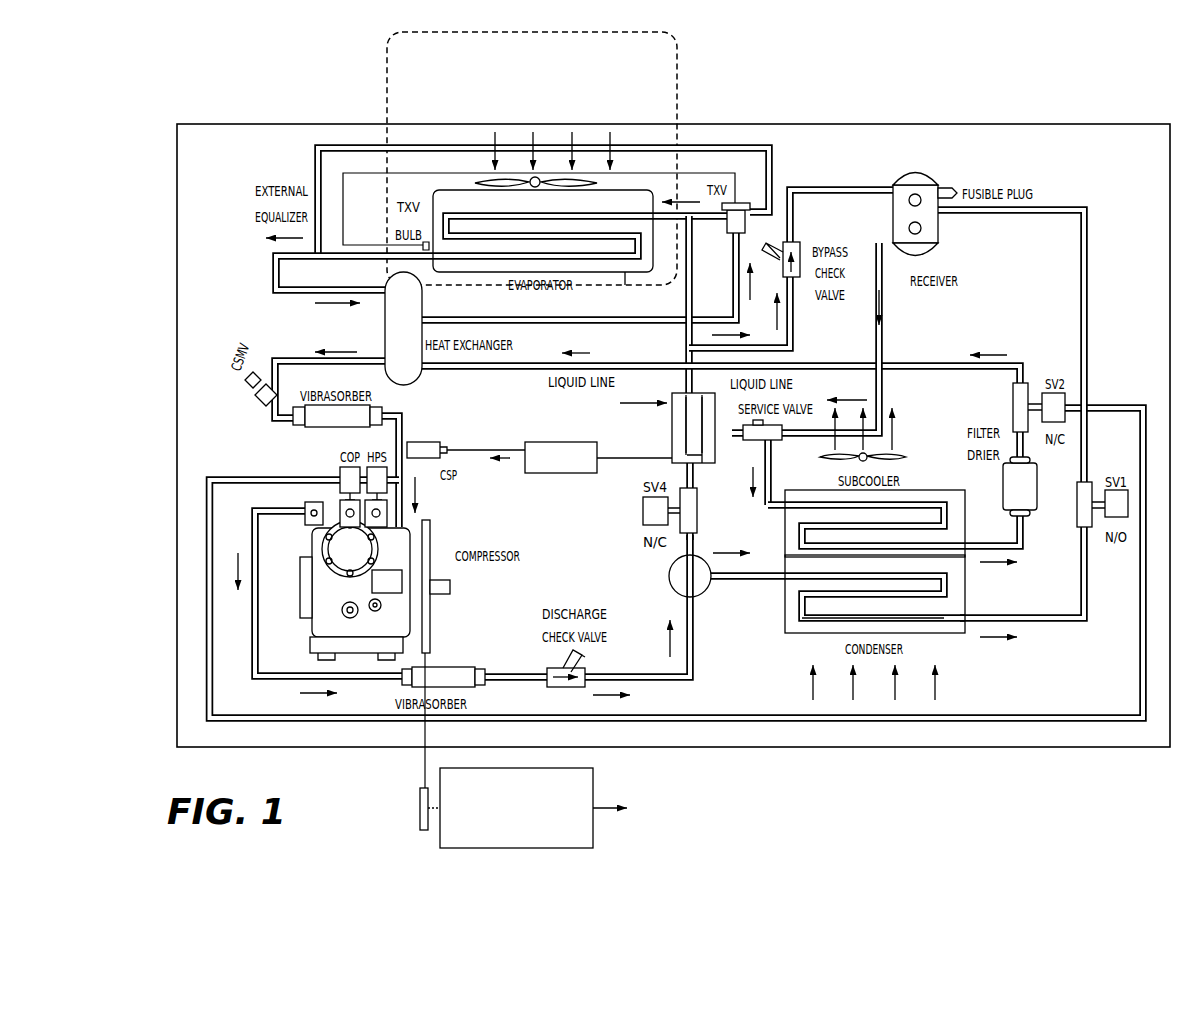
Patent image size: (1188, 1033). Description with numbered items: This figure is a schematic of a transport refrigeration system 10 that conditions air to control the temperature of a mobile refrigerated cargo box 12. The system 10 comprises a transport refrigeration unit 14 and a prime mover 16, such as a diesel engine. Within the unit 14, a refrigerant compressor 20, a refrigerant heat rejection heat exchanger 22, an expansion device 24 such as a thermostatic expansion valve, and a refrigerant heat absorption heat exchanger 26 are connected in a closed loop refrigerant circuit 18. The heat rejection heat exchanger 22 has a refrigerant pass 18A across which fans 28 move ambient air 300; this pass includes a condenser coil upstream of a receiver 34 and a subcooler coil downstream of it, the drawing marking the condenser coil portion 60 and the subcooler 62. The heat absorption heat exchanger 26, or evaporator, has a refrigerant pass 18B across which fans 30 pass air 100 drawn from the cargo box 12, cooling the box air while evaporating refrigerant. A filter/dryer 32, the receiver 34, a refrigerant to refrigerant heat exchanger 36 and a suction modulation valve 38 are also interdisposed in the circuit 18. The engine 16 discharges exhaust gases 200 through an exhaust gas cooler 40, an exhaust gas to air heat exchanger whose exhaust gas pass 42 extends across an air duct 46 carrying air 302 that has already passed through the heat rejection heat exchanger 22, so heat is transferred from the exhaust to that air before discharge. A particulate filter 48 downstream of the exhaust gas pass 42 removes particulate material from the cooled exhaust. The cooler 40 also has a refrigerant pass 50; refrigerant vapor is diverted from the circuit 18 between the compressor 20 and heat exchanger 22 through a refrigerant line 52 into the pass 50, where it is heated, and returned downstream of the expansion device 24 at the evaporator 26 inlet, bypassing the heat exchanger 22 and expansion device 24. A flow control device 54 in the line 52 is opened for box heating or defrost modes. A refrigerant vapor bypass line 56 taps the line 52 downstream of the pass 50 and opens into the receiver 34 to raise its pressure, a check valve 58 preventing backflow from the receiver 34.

The refrigeration system 10 is at (845, 88).
The refrigerated cargo box 12 is at (541, 75).
The transport refrigeration unit 14 is at (992, 125).
The prime mover 16 is at (583, 855).
The refrigerant circuit 18 is at (663, 680).
The refrigerant pass 18A is at (793, 602).
The refrigerant pass 18B is at (612, 210).
The compressor 20 is at (317, 613).
The refrigerant heat rejection heat exchanger 22 is at (975, 592).
The expansion device 24 is at (746, 222).
The refrigerant heat absorption heat exchanger 26 is at (625, 282).
The fans 28 is at (902, 452).
The fans 30 is at (580, 177).
The filter/dryer 32 is at (1037, 502).
The receiver 34 is at (940, 222).
The refrigerant to refrigerant heat exchanger 36 is at (383, 332).
The suction modulation valve 38 is at (250, 400).
The exhaust gas cooler 40 is at (672, 423).
The exhaust gas pass 42 is at (673, 445).
The air duct 46 is at (692, 420).
The particulate filter 48 is at (570, 475).
The refrigerant pass 50 is at (715, 452).
The refrigerant line 52 is at (687, 325).
The flow control device 54 is at (669, 572).
The refrigerant vapor bypass line 56 is at (805, 318).
The check valve 58 is at (797, 242).
The condenser coil segment 60 is at (913, 630).
The subcooler 62 is at (910, 497).
The air 100 is at (533, 135).
The exhaust gases 200 is at (518, 458).
The ambient air 300 is at (897, 690).
The air 302 is at (897, 435).